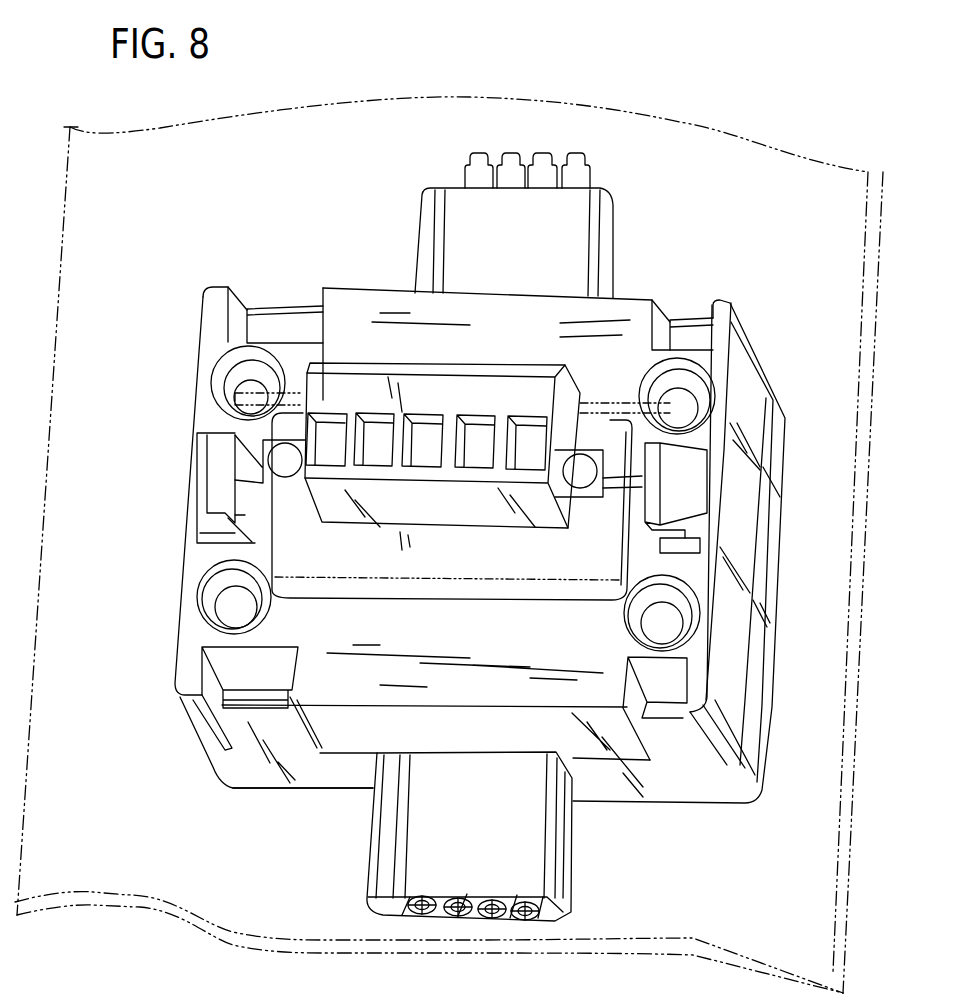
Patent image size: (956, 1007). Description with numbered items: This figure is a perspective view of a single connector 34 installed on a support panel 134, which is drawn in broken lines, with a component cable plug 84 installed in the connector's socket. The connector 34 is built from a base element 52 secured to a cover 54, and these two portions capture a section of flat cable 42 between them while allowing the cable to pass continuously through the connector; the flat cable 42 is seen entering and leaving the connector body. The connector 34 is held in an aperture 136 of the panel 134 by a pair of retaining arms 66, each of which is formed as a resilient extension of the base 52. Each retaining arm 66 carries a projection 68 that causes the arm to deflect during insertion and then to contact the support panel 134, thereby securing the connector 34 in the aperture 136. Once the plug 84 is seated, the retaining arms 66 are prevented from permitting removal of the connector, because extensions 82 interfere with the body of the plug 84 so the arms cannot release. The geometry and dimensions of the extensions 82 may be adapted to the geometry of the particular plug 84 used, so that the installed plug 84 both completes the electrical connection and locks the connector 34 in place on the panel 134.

The panel 134 is at (653, 137).
The flat cable 42 is at (583, 218).
The connector 34 is at (762, 302).
The component cable plug 84 is at (333, 385).
The extensions 82 is at (245, 472).
The projection 68 is at (213, 503).
The retaining arms 66 is at (225, 534).
The aperture 136 is at (262, 598).
The base element 52 is at (197, 724).
The cover 54 is at (248, 778).